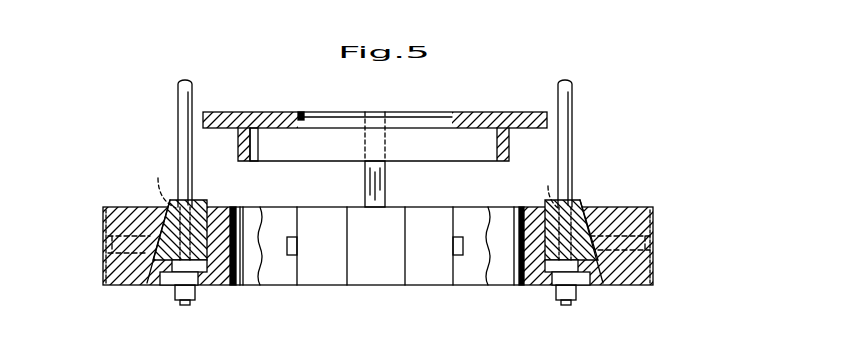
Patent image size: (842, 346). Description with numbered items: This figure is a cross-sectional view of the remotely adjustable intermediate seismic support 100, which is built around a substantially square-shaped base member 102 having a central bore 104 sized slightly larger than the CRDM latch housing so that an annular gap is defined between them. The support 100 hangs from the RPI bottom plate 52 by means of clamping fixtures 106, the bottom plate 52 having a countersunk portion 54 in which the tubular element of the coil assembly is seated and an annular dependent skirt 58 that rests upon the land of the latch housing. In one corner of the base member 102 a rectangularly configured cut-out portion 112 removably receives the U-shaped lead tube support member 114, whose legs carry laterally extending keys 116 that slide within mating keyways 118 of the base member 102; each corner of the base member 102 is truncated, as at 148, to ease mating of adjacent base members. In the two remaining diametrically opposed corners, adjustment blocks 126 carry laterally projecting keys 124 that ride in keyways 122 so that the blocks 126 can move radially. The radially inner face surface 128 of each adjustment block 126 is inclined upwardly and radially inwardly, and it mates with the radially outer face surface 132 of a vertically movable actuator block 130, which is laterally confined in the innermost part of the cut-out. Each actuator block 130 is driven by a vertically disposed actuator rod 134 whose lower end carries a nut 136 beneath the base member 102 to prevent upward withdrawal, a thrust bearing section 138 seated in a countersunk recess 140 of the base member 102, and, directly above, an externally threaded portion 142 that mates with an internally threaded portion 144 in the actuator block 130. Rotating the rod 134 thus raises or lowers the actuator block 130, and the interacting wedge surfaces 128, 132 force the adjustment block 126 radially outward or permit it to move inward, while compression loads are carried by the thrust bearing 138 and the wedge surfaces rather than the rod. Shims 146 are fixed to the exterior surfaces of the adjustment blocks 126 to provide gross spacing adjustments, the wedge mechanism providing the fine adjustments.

The intermediate seismic support 100 is at (103, 195).
The bottom plate 52 is at (470, 115).
The countersunk portion 54 is at (299, 111).
The annular dependent skirt 58 is at (256, 161).
The base member 102 is at (226, 212).
The central bore 104 is at (516, 215).
The clamping fixture 106 is at (368, 180).
The rectangularly configured cut-out portion 112 is at (312, 268).
The lead tube support member 114 is at (416, 277).
The keys 116 is at (293, 258).
The keyways 118 is at (298, 242).
The keyways 122 is at (100, 243).
The keys 124 is at (108, 254).
The adjustment block 126 is at (126, 286).
The radially inner face surface 128 is at (167, 220).
The actuator block 130 is at (228, 284).
The radially outer face surface 132 is at (150, 286).
The actuator rod 134 is at (193, 90).
The nut 136 is at (185, 306).
The thrust bearing section 138 is at (185, 287).
The countersunk recess 140 is at (205, 288).
The externally threaded portion 142 is at (192, 183).
The internally threaded portion 144 is at (351, 183).
The shim 146 is at (104, 277).
The truncated corner configuration 148 is at (381, 246).